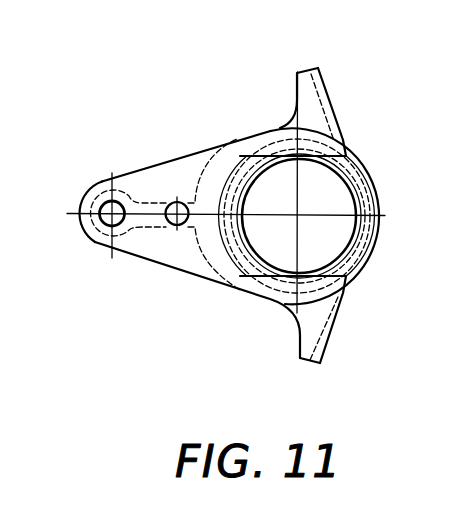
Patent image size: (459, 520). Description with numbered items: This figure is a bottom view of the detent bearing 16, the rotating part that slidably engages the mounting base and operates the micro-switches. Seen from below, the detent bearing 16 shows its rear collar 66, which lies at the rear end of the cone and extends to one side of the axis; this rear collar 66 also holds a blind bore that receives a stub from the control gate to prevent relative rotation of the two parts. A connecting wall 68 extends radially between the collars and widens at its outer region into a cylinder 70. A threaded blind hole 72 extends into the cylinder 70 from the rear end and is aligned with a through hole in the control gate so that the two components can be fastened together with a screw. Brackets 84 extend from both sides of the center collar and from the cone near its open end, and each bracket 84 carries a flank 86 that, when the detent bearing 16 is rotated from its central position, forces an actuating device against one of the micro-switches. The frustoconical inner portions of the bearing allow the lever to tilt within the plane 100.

The detent bearing 16 is at (241, 327).
The collar 66 is at (178, 270).
The connecting wall 68 is at (151, 202).
The cylinder 70 is at (92, 243).
The threaded blind hole 72 is at (109, 206).
The brackets 84 is at (298, 72).
The flank 86 is at (332, 98).
The plane 100 is at (384, 216).